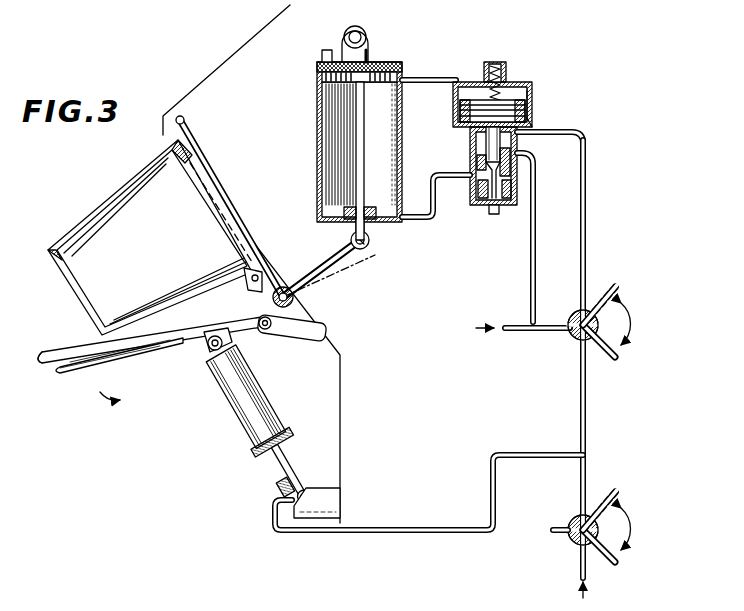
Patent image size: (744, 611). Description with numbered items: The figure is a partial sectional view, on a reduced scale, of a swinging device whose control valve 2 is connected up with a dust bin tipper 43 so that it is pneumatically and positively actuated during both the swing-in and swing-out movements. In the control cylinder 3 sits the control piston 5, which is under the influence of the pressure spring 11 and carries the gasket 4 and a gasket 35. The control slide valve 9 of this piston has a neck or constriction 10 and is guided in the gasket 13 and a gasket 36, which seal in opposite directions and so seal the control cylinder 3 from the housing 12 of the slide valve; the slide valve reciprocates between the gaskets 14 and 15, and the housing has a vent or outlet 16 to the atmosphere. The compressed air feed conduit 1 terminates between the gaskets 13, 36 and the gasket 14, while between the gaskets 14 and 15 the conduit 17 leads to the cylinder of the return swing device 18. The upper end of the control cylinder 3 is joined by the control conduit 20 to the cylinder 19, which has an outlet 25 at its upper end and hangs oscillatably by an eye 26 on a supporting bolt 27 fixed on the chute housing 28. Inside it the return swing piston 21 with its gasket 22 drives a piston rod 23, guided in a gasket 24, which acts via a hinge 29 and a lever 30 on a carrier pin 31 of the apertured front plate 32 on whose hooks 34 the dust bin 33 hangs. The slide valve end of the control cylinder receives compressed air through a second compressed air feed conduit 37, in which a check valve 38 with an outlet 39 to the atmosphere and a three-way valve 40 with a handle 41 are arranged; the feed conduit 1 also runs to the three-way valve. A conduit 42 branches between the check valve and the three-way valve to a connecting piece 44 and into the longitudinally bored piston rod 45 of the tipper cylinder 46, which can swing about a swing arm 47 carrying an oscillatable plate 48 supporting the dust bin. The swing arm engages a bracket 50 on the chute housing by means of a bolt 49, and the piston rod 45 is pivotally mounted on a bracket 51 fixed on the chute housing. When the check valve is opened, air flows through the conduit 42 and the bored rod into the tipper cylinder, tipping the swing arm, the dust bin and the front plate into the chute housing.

The compressed air feed conduit 1 is at (520, 325).
The control valve 2 is at (466, 134).
The control cylinder 3 is at (530, 84).
The gasket 4 is at (532, 108).
The control piston 5 is at (458, 110).
The control slide valve 9 is at (484, 198).
The neck or constriction 10 is at (476, 154).
The pressure spring 11 is at (506, 68).
The housing 12 is at (510, 176).
The gasket 13 is at (535, 156).
The gasket 14 is at (476, 166).
The gasket 15 is at (511, 200).
The vent or outlet 16 is at (493, 214).
The conduit 17 is at (430, 220).
The return swing device 18 is at (348, 240).
The cylinder 19 is at (317, 134).
The control conduit 20 is at (433, 74).
The return swing piston 21 is at (317, 70).
The gasket 22 is at (322, 80).
The piston rod 23 is at (350, 98).
The gasket 24 is at (376, 214).
The outlet 25 is at (322, 55).
The eye 26 is at (369, 48).
The supporting bolt 27 is at (349, 34).
The chute housing 28 is at (200, 84).
The hinge 29 is at (370, 240).
The lever 30 is at (323, 326).
The carrier pin 31 is at (294, 300).
The apertured front plate 32 is at (200, 152).
The dust bin 33 is at (148, 190).
The hooks 34 is at (243, 289).
The gasket 35 is at (534, 122).
The gasket 36 is at (540, 138).
The second compressed air feed conduit 37 is at (586, 188).
The check valve 38 is at (574, 516).
The outlet 39 is at (556, 528).
The three-way valve 40 is at (574, 338).
The handle 41 is at (613, 290).
The conduit 42 is at (426, 526).
The dust bin tipper 43 is at (292, 422).
The connecting piece 44 is at (280, 492).
The piston rod 45 is at (300, 458).
The tipper cylinder 46 is at (236, 416).
The swing arm 47 is at (153, 362).
The oscillatable plate 48 is at (64, 352).
The bolt 49 is at (252, 335).
The bracket 50 is at (296, 340).
The bracket 51 is at (338, 496).